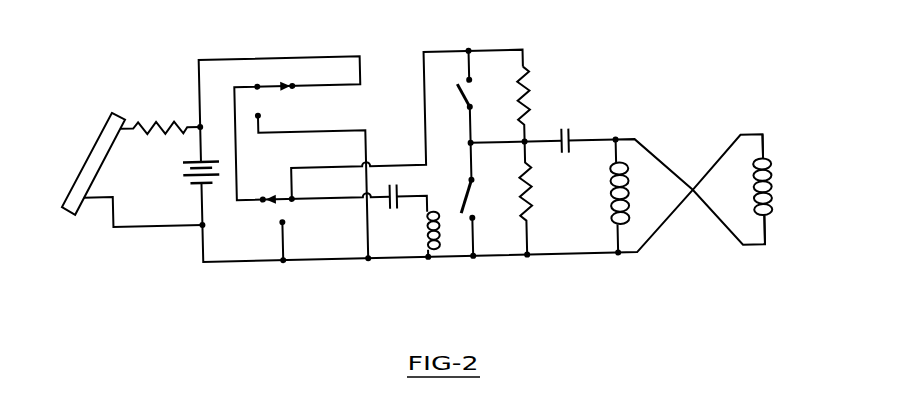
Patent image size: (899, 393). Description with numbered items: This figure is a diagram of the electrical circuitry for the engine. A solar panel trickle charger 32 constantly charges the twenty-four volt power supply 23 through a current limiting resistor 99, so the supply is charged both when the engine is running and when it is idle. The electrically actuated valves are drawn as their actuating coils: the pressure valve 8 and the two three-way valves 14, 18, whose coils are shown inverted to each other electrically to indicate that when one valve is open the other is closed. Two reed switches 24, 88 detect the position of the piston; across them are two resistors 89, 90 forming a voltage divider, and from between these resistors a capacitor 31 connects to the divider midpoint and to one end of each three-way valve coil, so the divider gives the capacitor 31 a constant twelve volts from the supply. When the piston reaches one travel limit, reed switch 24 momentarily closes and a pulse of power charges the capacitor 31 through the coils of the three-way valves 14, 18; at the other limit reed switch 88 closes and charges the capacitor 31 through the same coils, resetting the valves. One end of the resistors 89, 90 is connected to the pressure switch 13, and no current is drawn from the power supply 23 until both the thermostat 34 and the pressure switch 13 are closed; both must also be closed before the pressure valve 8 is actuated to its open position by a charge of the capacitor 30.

The solar panel trickle charger 32 is at (87, 147).
The current limiting resistor 99 is at (158, 116).
The power supply 23 is at (188, 175).
The thermostat 34 is at (277, 82).
The pressure switch 13 is at (286, 199).
The capacitor 30 is at (393, 183).
The pressure valve 8 is at (421, 242).
The reed switch 24 is at (468, 100).
The reed switch 88 is at (467, 194).
The resistor 89 is at (529, 85).
The resistor 90 is at (534, 200).
The capacitor 31 is at (569, 130).
The three-way valve 14 is at (625, 182).
The three-way valve 18 is at (772, 186).